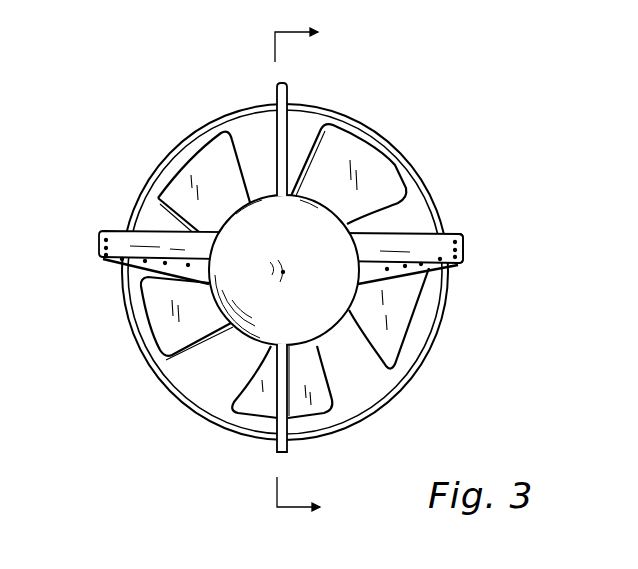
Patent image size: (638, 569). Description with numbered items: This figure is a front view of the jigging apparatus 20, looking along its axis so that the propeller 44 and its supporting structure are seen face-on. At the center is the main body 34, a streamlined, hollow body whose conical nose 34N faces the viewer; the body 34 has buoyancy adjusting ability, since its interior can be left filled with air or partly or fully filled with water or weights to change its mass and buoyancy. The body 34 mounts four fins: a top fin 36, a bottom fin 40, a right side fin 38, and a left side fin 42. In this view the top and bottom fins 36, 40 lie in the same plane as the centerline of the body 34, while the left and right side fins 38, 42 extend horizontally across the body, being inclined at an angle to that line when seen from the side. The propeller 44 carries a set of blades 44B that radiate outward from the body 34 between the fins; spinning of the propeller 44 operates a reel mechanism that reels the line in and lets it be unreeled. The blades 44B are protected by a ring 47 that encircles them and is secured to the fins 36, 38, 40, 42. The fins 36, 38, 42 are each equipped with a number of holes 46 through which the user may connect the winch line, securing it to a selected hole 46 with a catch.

The apparatus 20 is at (277, 271).
The main body 34 is at (353, 231).
The conical nose 34N is at (322, 272).
The top fin 36 is at (288, 97).
The right side fin 38 is at (463, 232).
The bottom fin 40 is at (288, 450).
The left side fin 42 is at (104, 243).
The propeller 44 is at (392, 144).
The propeller blades 44B is at (202, 162).
The holes 46 is at (100, 252).
The ring 47 is at (426, 182).